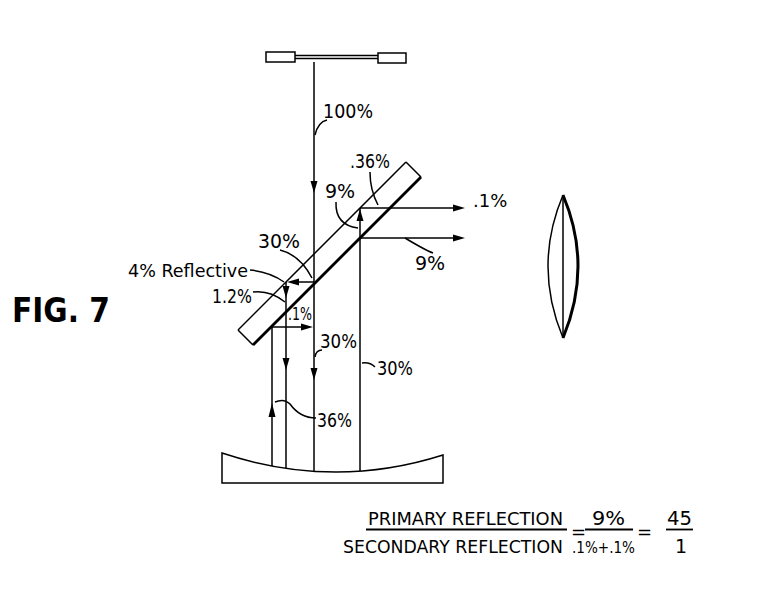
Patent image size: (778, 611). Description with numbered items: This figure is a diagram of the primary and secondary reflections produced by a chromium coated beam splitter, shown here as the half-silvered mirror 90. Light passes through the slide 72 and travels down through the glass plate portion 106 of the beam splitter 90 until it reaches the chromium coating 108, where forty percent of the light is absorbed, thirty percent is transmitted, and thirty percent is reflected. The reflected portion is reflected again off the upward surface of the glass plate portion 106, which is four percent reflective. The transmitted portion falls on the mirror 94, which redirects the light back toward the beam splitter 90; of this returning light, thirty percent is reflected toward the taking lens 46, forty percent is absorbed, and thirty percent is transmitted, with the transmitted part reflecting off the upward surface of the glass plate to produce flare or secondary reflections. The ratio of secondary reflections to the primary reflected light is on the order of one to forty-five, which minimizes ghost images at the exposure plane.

The slide 72 is at (413, 53).
The half-silvered mirror 90 is at (304, 264).
The glass plate portion 106 is at (410, 163).
The chromium coating 108 is at (416, 188).
The mirror 94 is at (443, 467).
The taking lens 46 is at (572, 222).